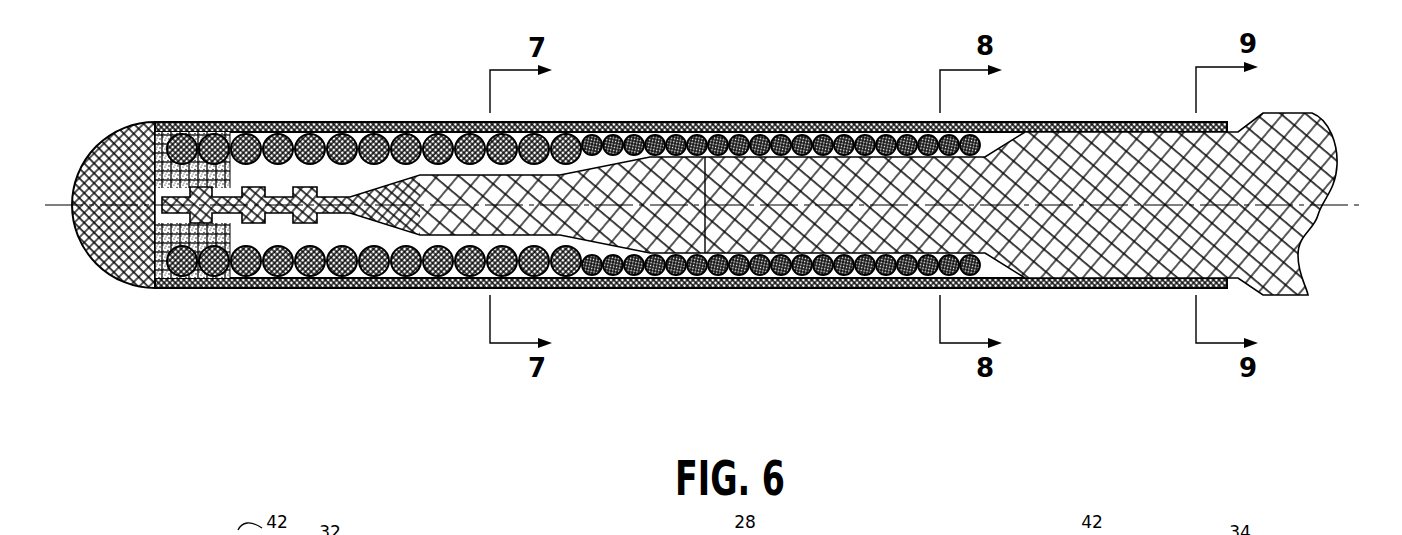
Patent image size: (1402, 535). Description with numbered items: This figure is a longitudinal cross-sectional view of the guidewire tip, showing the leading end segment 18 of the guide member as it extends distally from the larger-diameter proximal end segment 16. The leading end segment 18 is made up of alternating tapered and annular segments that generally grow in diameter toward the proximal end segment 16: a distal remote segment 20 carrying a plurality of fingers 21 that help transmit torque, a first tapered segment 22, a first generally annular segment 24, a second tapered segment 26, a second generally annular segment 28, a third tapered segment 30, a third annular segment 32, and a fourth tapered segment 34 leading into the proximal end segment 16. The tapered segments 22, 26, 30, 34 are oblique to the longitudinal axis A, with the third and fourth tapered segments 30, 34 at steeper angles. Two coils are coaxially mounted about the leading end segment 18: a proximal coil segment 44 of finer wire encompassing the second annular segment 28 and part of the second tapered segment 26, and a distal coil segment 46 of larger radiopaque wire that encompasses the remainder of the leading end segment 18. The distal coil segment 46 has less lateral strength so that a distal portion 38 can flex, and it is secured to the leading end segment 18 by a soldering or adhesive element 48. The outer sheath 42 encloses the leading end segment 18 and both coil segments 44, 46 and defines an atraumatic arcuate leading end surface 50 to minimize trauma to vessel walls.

The proximal end segment 16 is at (1325, 155).
The leading end segment 18 is at (824, 316).
The distal remote segment 20 is at (283, 178).
The fingers 21 is at (260, 190).
The first tapered segment 22 is at (385, 212).
The first generally annular segment 24 is at (463, 197).
The second tapered segment 26 is at (602, 250).
The second generally annular segment 28 is at (790, 193).
The third tapered segment 30 is at (1010, 180).
The third annular segment 32 is at (1123, 233).
The fourth tapered segment 34 is at (1251, 145).
The distal portion 38 is at (503, 222).
The outer sheath 42 is at (333, 122).
The proximal coil segment 44 is at (907, 268).
The distal coil segment 46 is at (470, 143).
The soldering or adhesive element 48 is at (166, 131).
The atraumatic arcuate leading end surface 50 is at (98, 237).
The longitudinal axis A is at (663, 203).